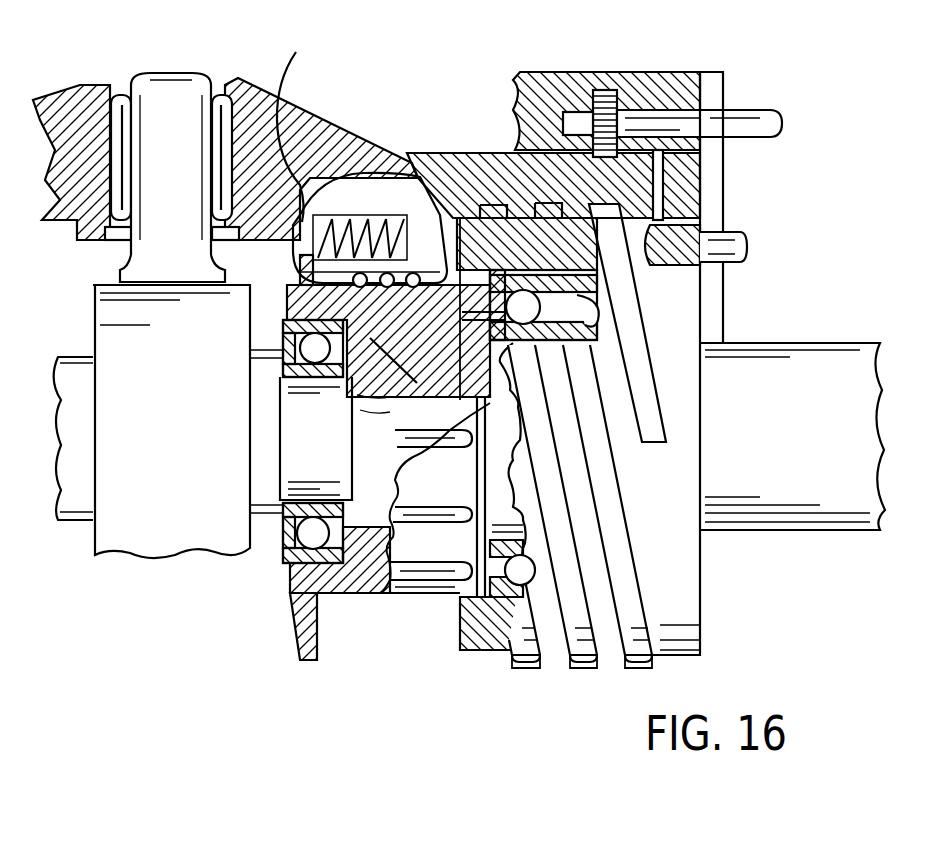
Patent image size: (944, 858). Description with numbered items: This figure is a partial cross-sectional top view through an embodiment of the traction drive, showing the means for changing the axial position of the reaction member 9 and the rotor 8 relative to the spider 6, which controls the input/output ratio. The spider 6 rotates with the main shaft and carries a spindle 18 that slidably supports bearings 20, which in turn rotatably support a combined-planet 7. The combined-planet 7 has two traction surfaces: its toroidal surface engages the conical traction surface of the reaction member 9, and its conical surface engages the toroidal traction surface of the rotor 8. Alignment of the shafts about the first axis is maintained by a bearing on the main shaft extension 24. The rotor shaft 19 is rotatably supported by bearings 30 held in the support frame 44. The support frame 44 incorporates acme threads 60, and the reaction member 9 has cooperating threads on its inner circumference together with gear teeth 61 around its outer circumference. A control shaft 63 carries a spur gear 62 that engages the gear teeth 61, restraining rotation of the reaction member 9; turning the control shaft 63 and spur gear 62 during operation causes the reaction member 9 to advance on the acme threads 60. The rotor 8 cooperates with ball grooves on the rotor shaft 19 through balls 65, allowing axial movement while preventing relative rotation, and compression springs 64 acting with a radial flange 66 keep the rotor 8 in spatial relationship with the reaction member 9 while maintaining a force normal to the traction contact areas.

The spider 6 is at (103, 313).
The combined-planet 7 is at (246, 80).
The rotor 8 is at (370, 207).
The reaction member 9 is at (440, 150).
The spindle 18 is at (176, 73).
The rotor shaft 19 is at (810, 520).
The bearings 20 is at (118, 95).
The main shaft extension 24 is at (390, 413).
The bearings 30 is at (500, 337).
The support frame 44 is at (693, 317).
The acme threads 60 is at (500, 205).
The gear teeth 61 is at (660, 150).
The spur gear 62 is at (600, 90).
The control shaft 63 is at (743, 110).
The compression springs 64 is at (330, 215).
The balls 65 is at (407, 310).
The radial flange 66 is at (304, 128).